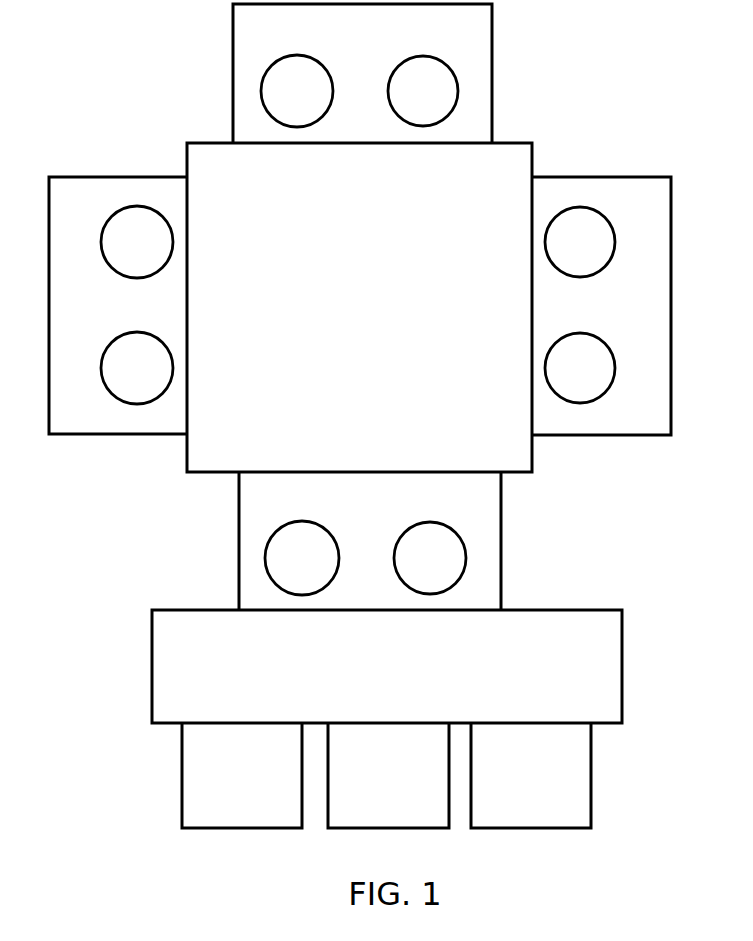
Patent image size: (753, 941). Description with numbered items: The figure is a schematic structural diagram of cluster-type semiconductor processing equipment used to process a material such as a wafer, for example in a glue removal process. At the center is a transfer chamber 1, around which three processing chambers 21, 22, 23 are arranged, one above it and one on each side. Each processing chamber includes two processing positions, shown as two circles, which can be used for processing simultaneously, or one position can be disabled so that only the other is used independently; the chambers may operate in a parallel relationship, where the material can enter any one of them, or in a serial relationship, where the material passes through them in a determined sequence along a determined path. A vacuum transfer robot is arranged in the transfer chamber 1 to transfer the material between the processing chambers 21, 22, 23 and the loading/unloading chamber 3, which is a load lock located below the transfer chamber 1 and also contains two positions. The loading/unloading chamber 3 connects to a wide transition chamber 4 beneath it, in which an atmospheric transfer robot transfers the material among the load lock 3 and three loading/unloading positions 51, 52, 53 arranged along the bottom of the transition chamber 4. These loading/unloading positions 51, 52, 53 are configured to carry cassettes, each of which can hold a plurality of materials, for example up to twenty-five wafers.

The transfer chamber 1 is at (353, 317).
The processing chamber 21 is at (343, 47).
The processing chamber 22 is at (63, 323).
The processing chamber 23 is at (618, 323).
The loading/unloading chamber 3 is at (362, 522).
The transition chamber 4 is at (357, 676).
The loading/unloading position 51 is at (226, 789).
The loading/unloading position 52 is at (376, 791).
The loading/unloading position 53 is at (516, 791).